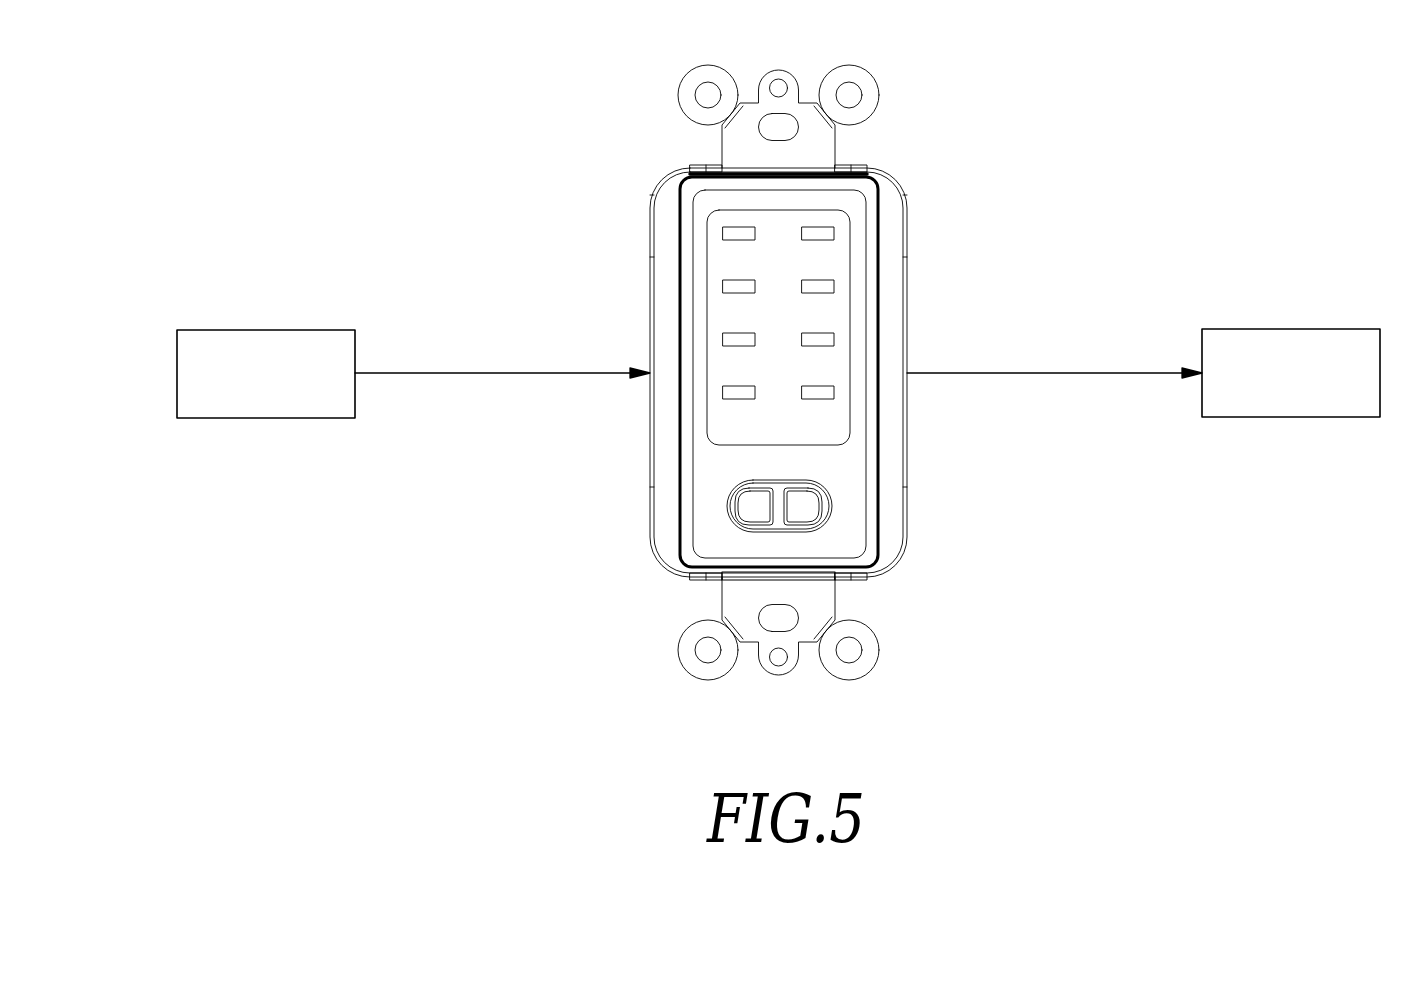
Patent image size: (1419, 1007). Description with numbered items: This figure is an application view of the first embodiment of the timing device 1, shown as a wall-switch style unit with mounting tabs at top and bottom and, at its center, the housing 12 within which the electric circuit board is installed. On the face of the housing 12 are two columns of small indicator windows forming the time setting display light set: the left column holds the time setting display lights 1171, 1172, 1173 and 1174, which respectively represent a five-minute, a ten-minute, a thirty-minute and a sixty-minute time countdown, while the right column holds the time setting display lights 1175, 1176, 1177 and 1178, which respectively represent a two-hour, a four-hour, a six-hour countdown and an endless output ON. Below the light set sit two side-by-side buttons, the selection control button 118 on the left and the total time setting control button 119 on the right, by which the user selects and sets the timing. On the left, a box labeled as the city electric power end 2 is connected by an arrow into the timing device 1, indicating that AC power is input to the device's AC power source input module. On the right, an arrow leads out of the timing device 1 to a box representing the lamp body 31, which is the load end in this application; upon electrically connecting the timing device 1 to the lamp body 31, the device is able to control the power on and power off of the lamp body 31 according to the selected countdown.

The timing device 1 is at (613, 165).
The city electric power end 2 is at (267, 330).
The housing 12 is at (883, 198).
The lamp body 31 is at (1290, 328).
The selection control button 118 is at (745, 505).
The total time setting control button 119 is at (812, 505).
The time setting display light 1171 is at (723, 234).
The time setting display light 1172 is at (723, 286).
The time setting display light 1173 is at (723, 340).
The time setting display light 1174 is at (723, 392).
The time setting display light 1175 is at (834, 234).
The time setting display light 1176 is at (834, 286).
The time setting display light 1177 is at (834, 340).
The time setting display light 1178 is at (834, 392).